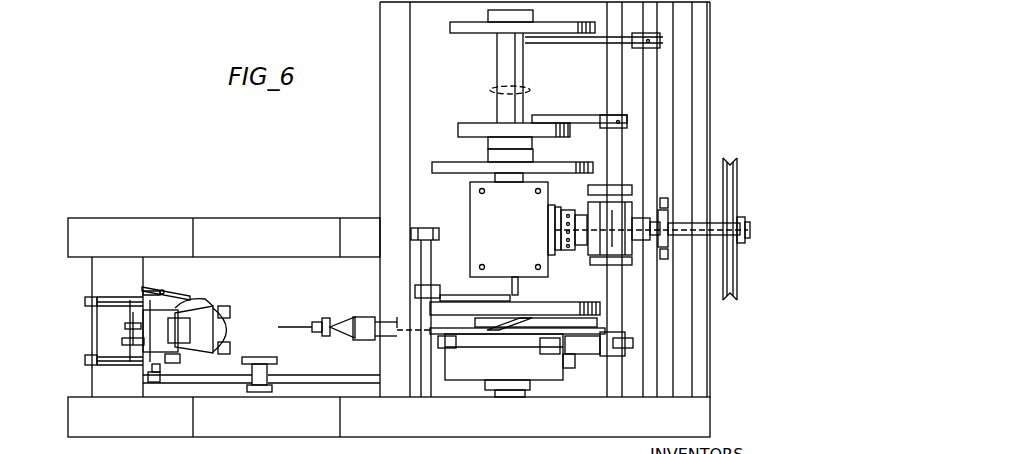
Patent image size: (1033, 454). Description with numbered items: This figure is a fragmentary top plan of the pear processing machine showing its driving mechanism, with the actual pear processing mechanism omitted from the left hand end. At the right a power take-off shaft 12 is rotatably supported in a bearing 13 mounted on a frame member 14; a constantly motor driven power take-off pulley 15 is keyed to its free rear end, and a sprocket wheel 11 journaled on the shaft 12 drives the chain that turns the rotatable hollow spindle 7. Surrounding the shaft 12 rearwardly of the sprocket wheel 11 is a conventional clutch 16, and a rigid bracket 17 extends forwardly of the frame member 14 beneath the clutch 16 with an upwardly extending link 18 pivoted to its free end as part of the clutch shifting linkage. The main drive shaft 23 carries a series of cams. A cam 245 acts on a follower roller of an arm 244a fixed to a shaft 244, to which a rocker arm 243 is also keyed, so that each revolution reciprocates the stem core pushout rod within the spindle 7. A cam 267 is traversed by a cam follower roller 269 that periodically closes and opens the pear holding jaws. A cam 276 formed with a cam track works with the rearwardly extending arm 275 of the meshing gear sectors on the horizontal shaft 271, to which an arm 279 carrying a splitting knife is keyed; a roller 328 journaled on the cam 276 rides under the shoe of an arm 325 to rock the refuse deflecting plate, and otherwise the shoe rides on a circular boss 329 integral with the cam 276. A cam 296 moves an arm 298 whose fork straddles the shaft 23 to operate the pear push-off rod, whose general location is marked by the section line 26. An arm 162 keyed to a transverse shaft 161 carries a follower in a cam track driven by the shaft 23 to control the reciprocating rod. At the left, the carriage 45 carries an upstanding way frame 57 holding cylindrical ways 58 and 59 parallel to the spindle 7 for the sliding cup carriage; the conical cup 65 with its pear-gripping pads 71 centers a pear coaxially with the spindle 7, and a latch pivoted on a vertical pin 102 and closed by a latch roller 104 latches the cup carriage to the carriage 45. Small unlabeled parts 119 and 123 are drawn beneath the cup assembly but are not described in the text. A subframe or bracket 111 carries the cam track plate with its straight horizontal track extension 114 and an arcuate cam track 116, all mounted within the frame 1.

The frame 1 is at (97, 280).
The hollow spindle 7 is at (287, 327).
The sprocket wheel 11 is at (563, 250).
The power take-off shaft 12 is at (750, 231).
The bearing 13 is at (655, 239).
The frame member 14 is at (690, 366).
The power take-off pulley 15 is at (738, 278).
The clutch 16 is at (671, 197).
The bracket 17 is at (455, 147).
The link 18 is at (460, 50).
The main drive shaft 23 is at (503, 52).
The section line 26 is at (397, 318).
The carriage 45 is at (126, 286).
The way frame 57 is at (92, 330).
The tubular way 58 is at (108, 308).
The tubular way 59 is at (108, 352).
The conical cup 65 is at (203, 330).
The pear-gripping pad 71 is at (222, 308).
The vertical pin 102 is at (163, 292).
The latch roller 104 is at (187, 297).
The subframe or bracket 111 is at (165, 392).
The straight horizontal track extension 114 is at (273, 381).
The arcuate cam track 116 is at (268, 360).
The block 119 is at (148, 378).
The block 123 is at (180, 360).
The shaft 161 is at (642, 397).
The arm 162 is at (586, 40).
The rocker arm 243 is at (604, 360).
The shaft 244 is at (608, 77).
The arm 244a is at (540, 115).
The cam 245 is at (470, 123).
The cam 267 is at (533, 375).
The cam follower roller 269 is at (450, 348).
The shaft 271 is at (432, 276).
The arm 275 is at (452, 300).
The cam 276 is at (600, 306).
The arm 279 is at (372, 345).
The cam 296 is at (540, 354).
The arm 298 is at (585, 354).
The arm 325 is at (536, 315).
The roller 328 is at (497, 326).
The circular boss 329 is at (570, 331).